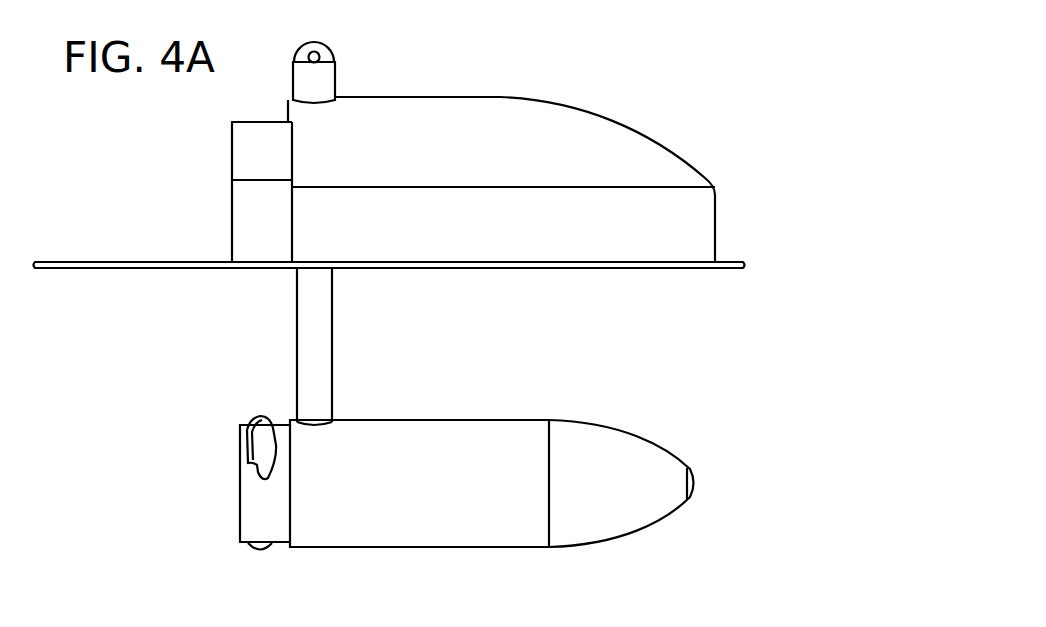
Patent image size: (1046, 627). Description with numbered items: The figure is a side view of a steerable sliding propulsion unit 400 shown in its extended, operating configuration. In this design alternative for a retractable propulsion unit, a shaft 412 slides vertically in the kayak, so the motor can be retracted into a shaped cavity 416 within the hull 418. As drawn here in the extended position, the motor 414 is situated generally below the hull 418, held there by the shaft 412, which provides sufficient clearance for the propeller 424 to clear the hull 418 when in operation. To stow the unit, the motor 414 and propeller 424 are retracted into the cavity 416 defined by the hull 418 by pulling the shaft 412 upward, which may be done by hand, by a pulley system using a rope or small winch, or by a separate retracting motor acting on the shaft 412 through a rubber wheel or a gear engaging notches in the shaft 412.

The sliding propulsion unit 400 is at (625, 41).
The shaft 412 is at (318, 345).
The motor 414 is at (465, 515).
The cavity 416 is at (450, 130).
The hull 418 is at (135, 262).
The propeller 424 is at (262, 512).